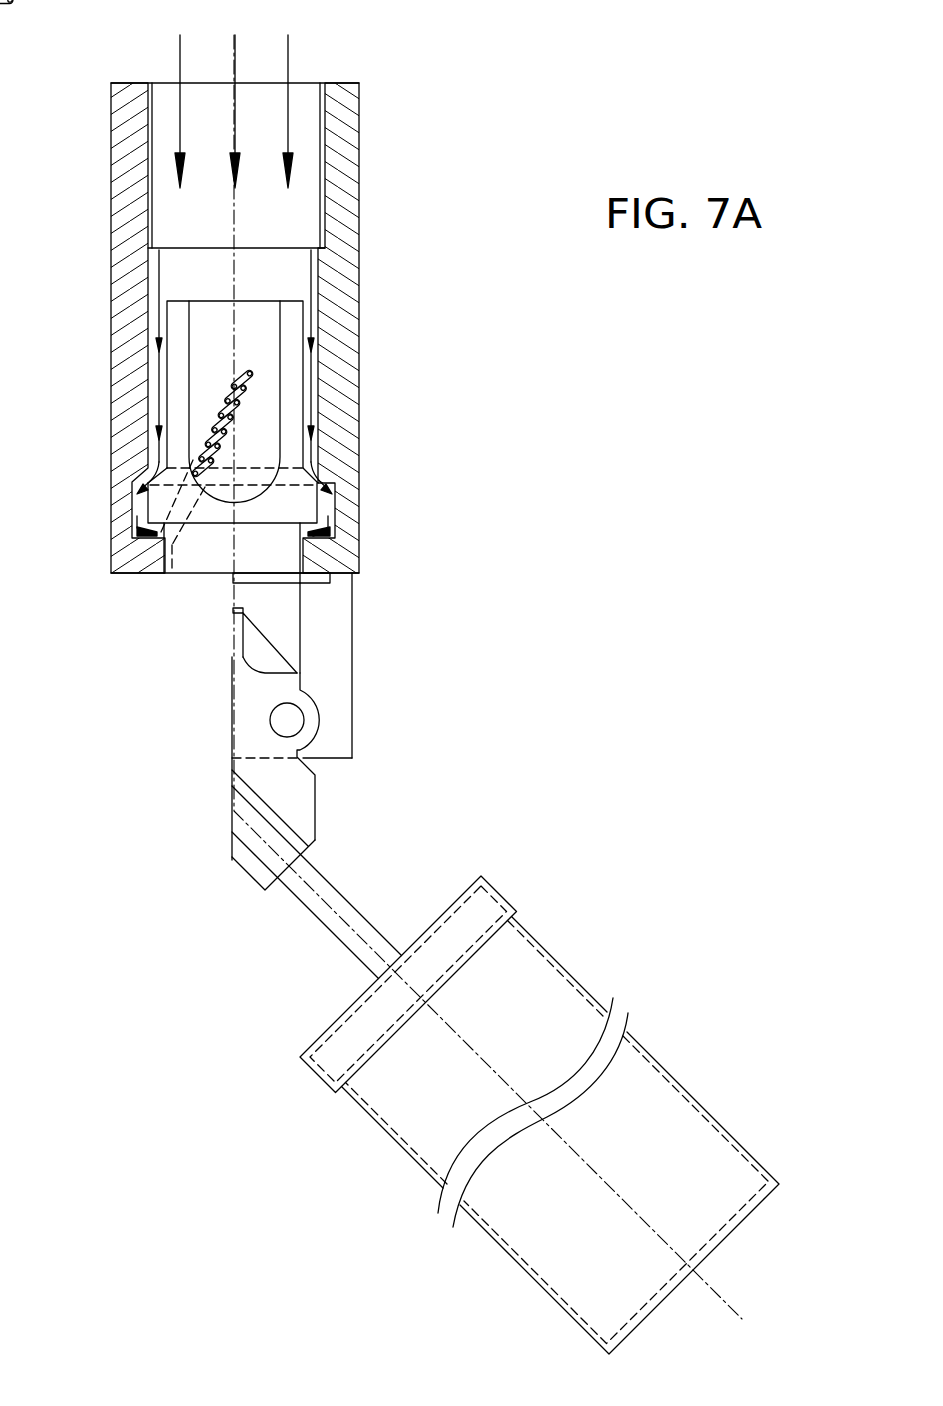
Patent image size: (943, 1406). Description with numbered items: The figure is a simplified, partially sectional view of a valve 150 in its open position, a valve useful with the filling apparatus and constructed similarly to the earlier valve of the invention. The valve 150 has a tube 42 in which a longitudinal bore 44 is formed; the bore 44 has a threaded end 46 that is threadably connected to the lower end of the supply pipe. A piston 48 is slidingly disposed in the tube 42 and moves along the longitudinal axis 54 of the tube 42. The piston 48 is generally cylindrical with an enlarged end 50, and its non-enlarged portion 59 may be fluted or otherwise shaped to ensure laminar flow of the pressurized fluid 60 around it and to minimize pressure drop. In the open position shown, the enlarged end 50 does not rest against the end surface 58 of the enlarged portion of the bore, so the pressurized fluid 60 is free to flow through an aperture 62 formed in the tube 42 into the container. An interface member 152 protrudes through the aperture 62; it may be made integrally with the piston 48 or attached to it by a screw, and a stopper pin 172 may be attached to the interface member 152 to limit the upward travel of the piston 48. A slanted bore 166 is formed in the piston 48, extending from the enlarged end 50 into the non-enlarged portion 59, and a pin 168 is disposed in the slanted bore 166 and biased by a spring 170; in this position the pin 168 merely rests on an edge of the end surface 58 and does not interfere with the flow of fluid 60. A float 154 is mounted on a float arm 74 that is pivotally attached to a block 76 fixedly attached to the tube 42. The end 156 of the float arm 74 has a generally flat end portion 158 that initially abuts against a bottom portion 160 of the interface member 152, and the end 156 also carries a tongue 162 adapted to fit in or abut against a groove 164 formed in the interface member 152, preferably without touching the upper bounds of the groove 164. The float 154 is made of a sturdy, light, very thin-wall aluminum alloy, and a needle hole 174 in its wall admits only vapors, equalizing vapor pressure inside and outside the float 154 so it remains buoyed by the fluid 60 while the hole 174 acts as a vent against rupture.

The tube 42 is at (359, 242).
The longitudinal bore 44 is at (167, 93).
The threaded end 46 is at (316, 97).
The piston 48 is at (293, 368).
The enlarged end 50 is at (317, 503).
The longitudinal axis 54 is at (234, 220).
The end surface 58 is at (335, 535).
The non-enlarged portion 59 is at (200, 378).
The pressurized fluid 60 is at (238, 53).
The aperture 62 is at (172, 577).
The float arm 74 is at (350, 900).
The block 76 is at (342, 747).
The valve 150 is at (368, 146).
The interface member 152 is at (293, 610).
The float 154 is at (672, 1083).
The end 156 is at (252, 683).
The flat end portion 158 is at (243, 657).
The bottom portion 160 is at (300, 667).
The tongue 162 is at (233, 637).
The groove 164 is at (233, 611).
The slanted bore 166 is at (190, 428).
The pin 168 is at (178, 508).
The spring 170 is at (240, 404).
The stopper pin 172 is at (330, 583).
The needle hole 174 is at (545, 945).